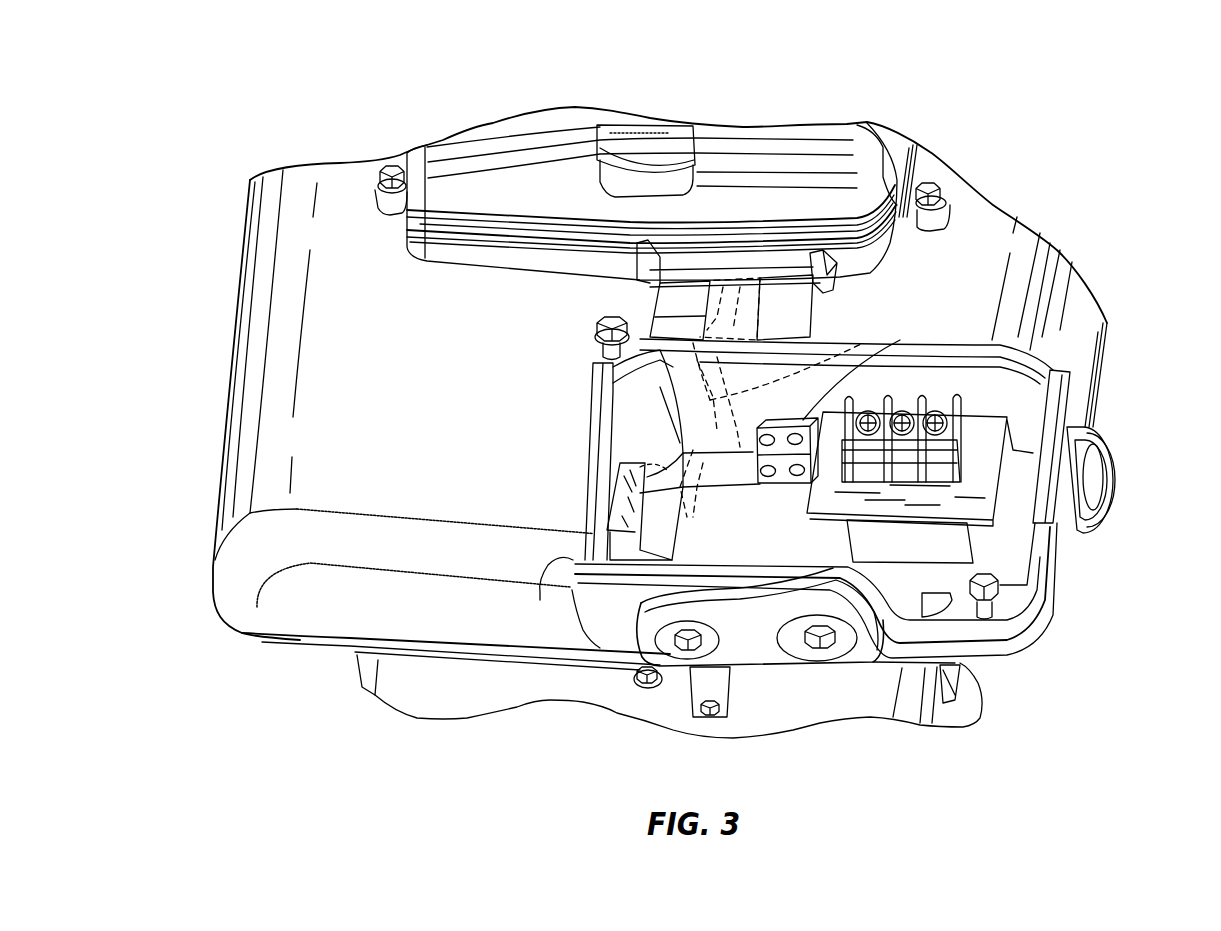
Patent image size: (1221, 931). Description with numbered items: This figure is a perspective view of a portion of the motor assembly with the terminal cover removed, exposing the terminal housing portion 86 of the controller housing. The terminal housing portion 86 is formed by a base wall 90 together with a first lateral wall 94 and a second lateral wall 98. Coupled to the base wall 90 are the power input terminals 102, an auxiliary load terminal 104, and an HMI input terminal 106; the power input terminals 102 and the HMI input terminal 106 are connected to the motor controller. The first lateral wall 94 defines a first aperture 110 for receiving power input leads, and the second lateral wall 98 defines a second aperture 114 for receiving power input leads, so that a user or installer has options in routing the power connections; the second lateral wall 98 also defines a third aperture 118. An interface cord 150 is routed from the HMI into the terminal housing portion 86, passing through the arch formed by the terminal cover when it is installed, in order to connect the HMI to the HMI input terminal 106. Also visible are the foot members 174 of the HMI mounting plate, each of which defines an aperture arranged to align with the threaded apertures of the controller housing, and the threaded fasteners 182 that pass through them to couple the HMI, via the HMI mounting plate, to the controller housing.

The terminal housing portion 86 is at (570, 557).
The base wall 90 is at (1000, 537).
The first lateral wall 94 is at (1043, 463).
The second lateral wall 98 is at (607, 625).
The power input terminals 102 is at (973, 403).
The auxiliary load terminal 104 is at (803, 422).
The HMI input terminal 106 is at (620, 543).
The first aperture 110 is at (1093, 477).
The second aperture 114 is at (822, 655).
The third aperture 118 is at (683, 650).
The interface cord 150 is at (812, 405).
The foot members 174 is at (378, 200).
The threaded fasteners 182 is at (395, 165).